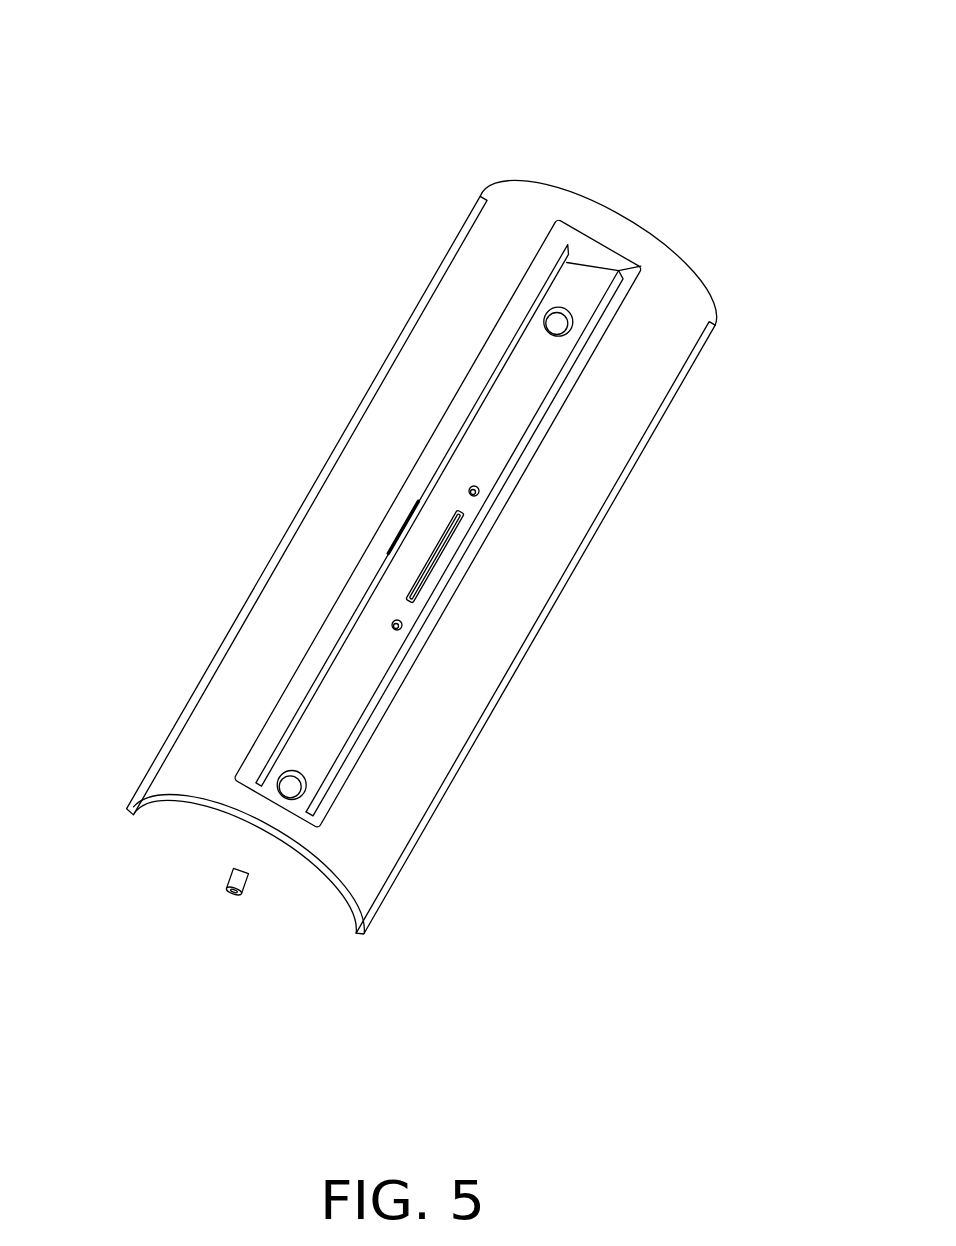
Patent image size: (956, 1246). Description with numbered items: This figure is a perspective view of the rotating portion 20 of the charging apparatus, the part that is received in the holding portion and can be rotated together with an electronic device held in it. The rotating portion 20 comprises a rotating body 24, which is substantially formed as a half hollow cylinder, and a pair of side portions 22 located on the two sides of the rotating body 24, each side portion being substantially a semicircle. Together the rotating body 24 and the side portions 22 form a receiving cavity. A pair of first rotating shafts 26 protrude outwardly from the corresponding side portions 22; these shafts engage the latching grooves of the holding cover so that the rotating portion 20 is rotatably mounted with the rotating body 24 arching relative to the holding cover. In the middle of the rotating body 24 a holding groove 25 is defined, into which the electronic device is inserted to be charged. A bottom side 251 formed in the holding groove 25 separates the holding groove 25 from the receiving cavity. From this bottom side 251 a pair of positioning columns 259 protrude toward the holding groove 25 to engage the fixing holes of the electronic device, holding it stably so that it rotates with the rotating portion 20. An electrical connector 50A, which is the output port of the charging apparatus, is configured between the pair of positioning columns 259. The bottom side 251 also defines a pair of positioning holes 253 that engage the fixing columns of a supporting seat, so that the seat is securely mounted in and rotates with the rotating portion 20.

The rotating portion 20 is at (506, 36).
The side portions 22 is at (192, 823).
The rotating body 24 is at (162, 783).
The holding groove 25 is at (342, 692).
The bottom side 251 is at (531, 392).
The positioning holes 253 is at (552, 326).
The positioning columns 259 is at (474, 491).
The electrical connector 50A is at (442, 555).
The first rotating shafts 26 is at (237, 880).